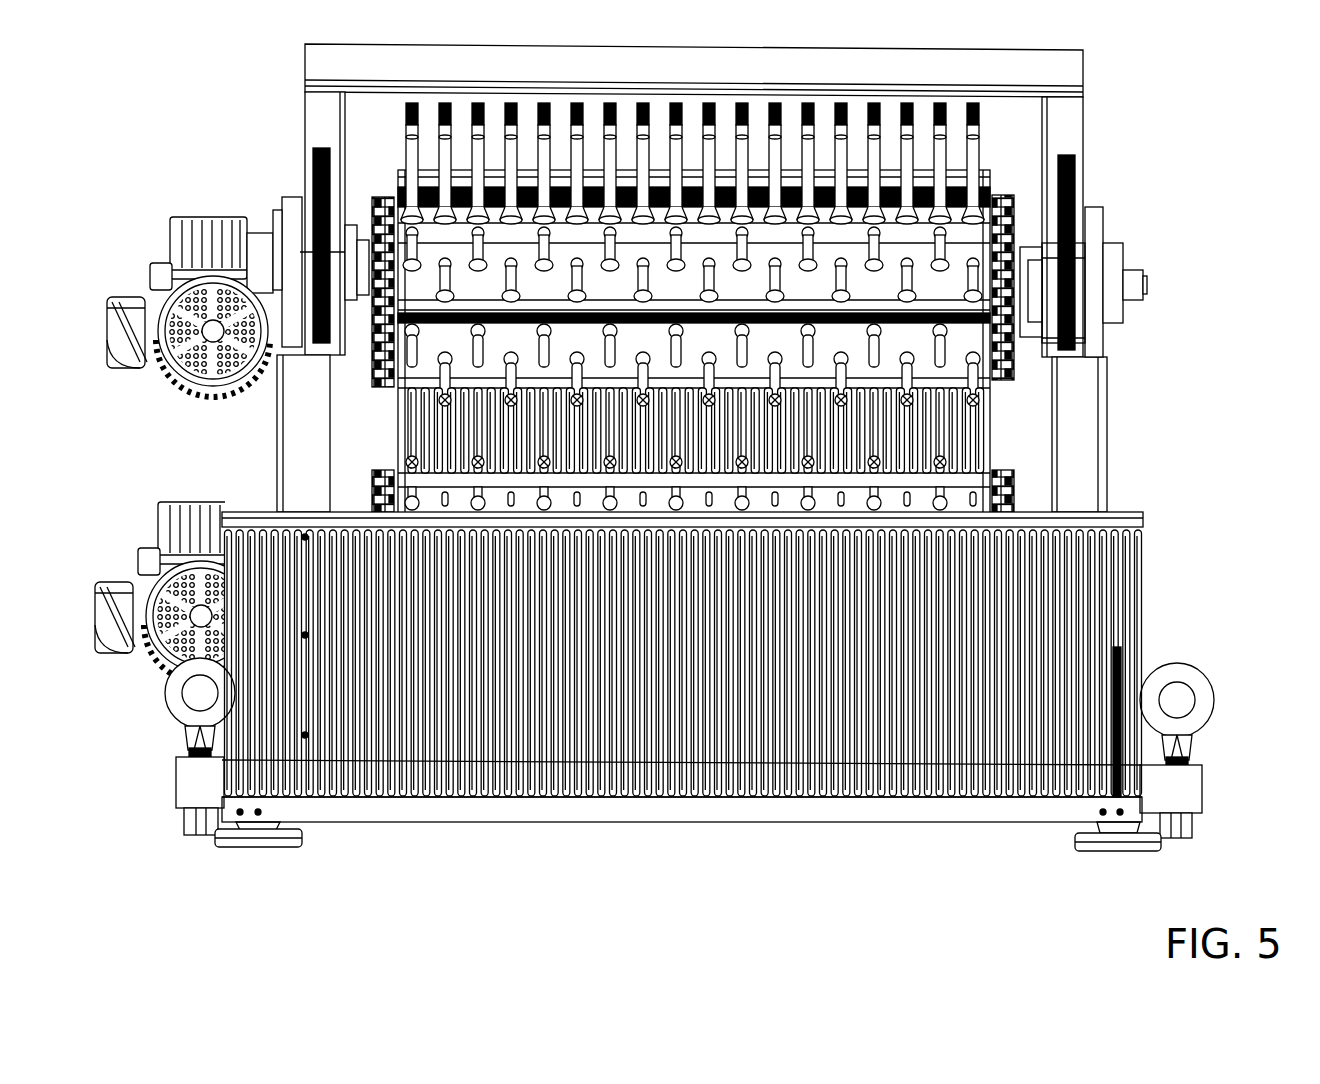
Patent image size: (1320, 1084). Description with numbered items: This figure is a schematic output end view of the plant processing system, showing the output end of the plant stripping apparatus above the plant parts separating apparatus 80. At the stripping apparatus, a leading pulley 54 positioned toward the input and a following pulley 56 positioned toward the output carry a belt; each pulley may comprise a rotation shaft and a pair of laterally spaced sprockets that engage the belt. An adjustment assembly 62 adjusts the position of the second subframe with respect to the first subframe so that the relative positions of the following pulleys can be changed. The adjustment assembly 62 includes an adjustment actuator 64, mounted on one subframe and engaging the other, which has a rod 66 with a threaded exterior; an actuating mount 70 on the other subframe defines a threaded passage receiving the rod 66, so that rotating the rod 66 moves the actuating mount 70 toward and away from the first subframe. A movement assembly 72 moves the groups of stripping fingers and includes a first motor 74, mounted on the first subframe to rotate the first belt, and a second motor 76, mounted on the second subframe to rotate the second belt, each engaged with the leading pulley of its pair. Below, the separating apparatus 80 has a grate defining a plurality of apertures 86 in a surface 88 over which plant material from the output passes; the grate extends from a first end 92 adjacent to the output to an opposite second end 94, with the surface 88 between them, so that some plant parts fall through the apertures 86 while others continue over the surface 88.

The movement assembly 72 is at (170, 150).
The rod 66 is at (1076, 165).
The following pulley 56 is at (1016, 228).
The actuating mount 70 is at (1080, 250).
The adjustment actuator 64 is at (1080, 345).
The adjustment assembly 62 is at (1125, 368).
The second motor 76 is at (168, 378).
The leading pulley 54 is at (1016, 497).
The first end 92 is at (1118, 530).
The apertures 86 is at (1028, 598).
The plant parts separating apparatus 80 is at (1165, 622).
The first motor 74 is at (158, 665).
The second end 94 is at (928, 824).
The surface 88 is at (988, 799).